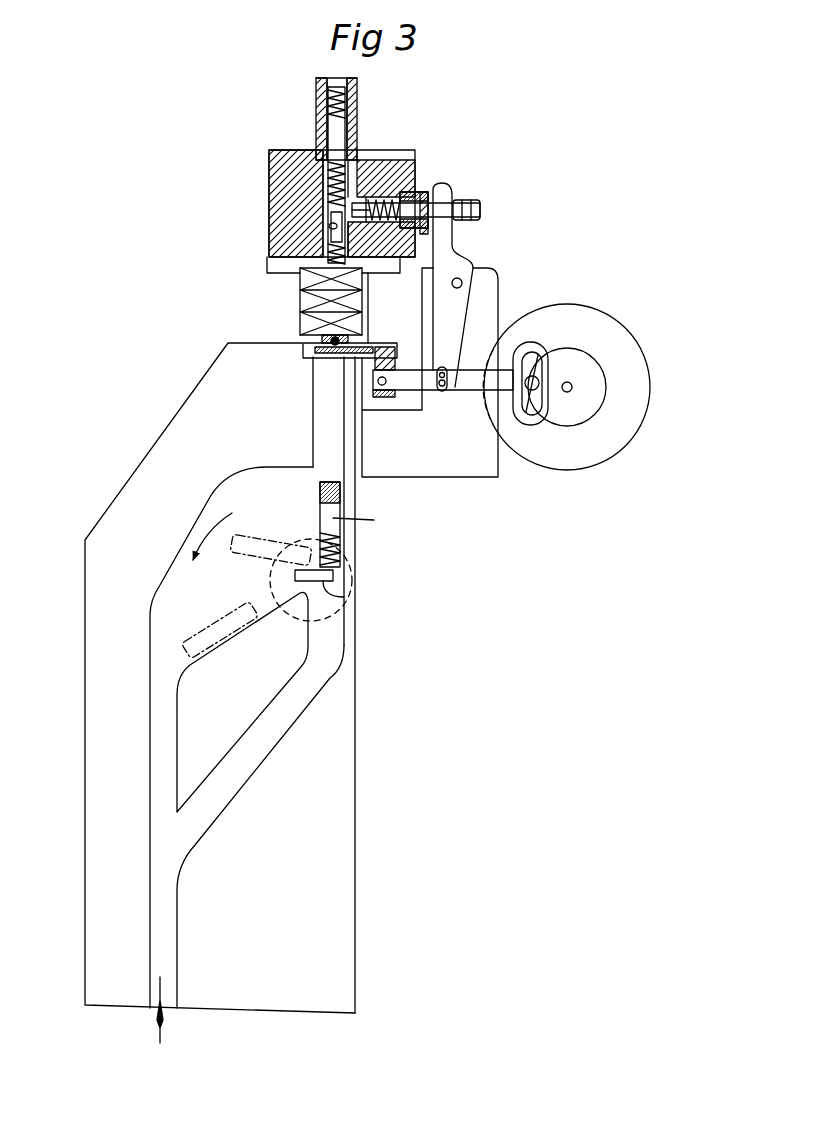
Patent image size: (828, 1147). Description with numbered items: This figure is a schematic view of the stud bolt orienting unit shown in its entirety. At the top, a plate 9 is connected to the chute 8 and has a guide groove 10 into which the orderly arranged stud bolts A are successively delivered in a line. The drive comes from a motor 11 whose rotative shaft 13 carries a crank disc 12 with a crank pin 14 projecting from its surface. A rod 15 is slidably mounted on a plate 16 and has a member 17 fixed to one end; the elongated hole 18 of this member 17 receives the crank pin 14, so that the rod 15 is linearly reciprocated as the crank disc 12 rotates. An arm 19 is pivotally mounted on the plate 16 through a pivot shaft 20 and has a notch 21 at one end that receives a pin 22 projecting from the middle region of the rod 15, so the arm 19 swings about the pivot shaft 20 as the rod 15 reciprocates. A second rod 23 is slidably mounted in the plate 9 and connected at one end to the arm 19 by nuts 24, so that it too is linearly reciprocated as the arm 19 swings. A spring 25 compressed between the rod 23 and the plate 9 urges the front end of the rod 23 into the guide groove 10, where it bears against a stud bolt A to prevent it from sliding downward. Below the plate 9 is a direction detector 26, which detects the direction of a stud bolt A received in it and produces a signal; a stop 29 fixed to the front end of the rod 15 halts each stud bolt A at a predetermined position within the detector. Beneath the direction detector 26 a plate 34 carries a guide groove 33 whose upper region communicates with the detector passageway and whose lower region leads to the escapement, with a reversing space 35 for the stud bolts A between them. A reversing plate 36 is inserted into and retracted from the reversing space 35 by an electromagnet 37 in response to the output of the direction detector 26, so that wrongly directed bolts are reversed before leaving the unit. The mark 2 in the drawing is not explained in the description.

The section line indicator 2 is at (560, 185).
The chute 8 is at (316, 101).
The plate 9 is at (273, 207).
The guide groove 10 is at (330, 224).
The motor 11 is at (618, 333).
The crank disc 12 is at (588, 372).
The rotative shaft 13 is at (573, 387).
The crank pin 14 is at (534, 377).
The rod 15 is at (406, 386).
The plate 16 is at (432, 472).
The member 17 is at (541, 420).
The elongated hole 18 is at (526, 412).
The arm 19 is at (447, 242).
The pivot shaft 20 is at (462, 282).
The notch 21 is at (445, 392).
The pin 22 is at (441, 391).
The rod 23 is at (420, 203).
The nuts 24 is at (470, 202).
The spring 25 is at (412, 210).
The direction detector 26 is at (296, 300).
The stop 29 is at (387, 347).
The guide groove 33 is at (330, 633).
The plate 34 is at (356, 672).
The reversing space 35 is at (185, 580).
The reversing plate 36 is at (345, 597).
The electromagnet 37 is at (340, 575).
The stud bolts A is at (346, 186).